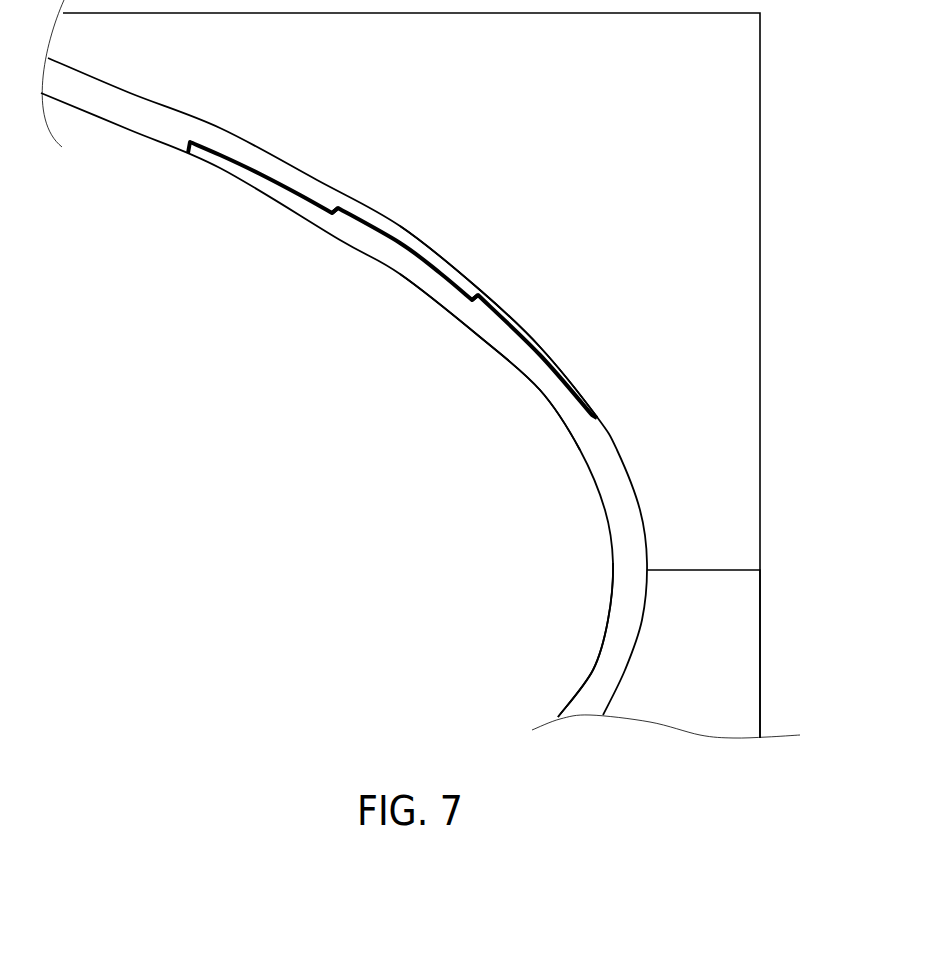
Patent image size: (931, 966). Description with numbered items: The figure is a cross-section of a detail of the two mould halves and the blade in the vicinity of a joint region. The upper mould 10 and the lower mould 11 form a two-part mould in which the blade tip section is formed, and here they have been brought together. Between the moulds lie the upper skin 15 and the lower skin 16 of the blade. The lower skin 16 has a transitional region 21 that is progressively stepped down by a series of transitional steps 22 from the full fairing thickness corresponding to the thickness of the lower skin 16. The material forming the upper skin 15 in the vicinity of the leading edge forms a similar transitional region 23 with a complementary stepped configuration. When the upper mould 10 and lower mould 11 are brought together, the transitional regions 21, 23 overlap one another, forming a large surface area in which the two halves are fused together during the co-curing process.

The upper mould 10 is at (742, 308).
The lower mould 11 is at (747, 675).
The upper skin 15 is at (145, 108).
The lower skin 16 is at (602, 655).
The transitional region 21 is at (480, 327).
The transitional steps 22 is at (340, 222).
The transitional region 23 is at (297, 163).